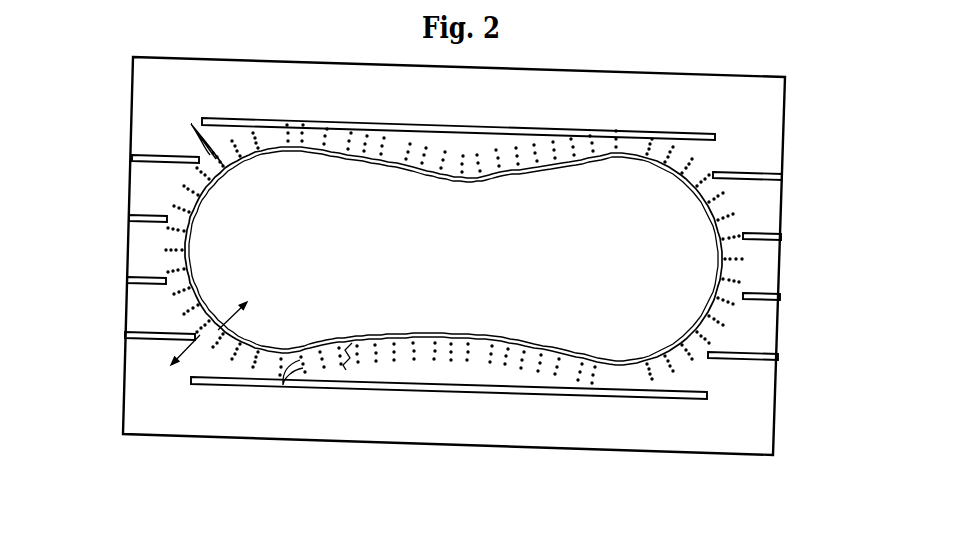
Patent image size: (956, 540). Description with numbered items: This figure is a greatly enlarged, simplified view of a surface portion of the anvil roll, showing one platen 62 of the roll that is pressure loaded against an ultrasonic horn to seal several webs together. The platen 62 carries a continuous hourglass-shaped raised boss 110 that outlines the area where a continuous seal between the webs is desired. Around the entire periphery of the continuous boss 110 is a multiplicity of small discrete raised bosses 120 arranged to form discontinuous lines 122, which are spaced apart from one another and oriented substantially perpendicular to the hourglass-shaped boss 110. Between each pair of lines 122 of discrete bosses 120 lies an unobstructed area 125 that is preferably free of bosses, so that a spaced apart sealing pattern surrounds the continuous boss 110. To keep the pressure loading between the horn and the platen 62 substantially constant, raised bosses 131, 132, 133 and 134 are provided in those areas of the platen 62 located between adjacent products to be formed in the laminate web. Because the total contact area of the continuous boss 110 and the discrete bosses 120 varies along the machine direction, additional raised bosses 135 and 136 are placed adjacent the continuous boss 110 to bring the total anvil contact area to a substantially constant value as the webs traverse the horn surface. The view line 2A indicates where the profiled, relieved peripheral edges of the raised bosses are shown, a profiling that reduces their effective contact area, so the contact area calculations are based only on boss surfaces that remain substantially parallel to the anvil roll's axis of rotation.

The platen 62 is at (224, 59).
The raised boss 136 is at (327, 120).
The raised boss 135 is at (590, 394).
The raised boss 134 is at (152, 156).
The raised boss 133 is at (148, 215).
The raised boss 132 is at (146, 277).
The raised boss 131 is at (140, 333).
The continuous hourglass-shaped raised boss 110 is at (520, 341).
The unobstructed area 125 is at (173, 240).
The discrete raised boss 120 is at (191, 124).
The discontinuous line 122 is at (352, 343).
The view line 2A is at (202, 322).